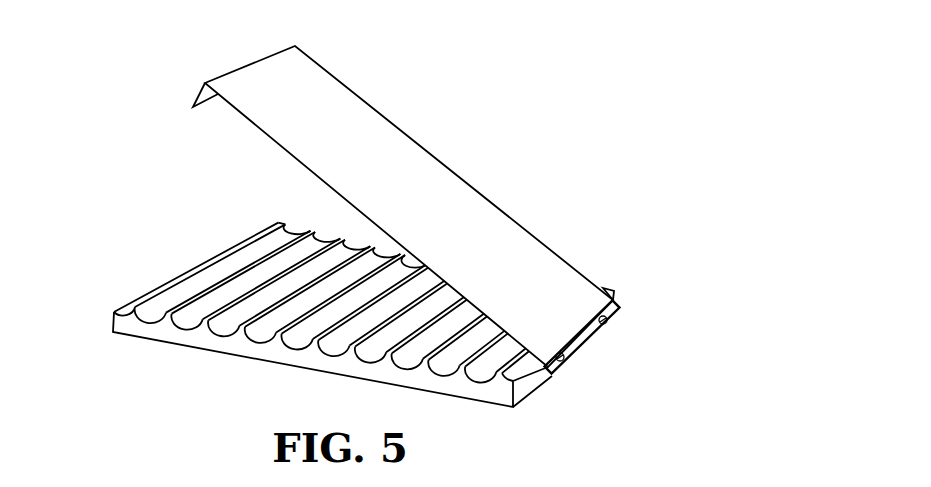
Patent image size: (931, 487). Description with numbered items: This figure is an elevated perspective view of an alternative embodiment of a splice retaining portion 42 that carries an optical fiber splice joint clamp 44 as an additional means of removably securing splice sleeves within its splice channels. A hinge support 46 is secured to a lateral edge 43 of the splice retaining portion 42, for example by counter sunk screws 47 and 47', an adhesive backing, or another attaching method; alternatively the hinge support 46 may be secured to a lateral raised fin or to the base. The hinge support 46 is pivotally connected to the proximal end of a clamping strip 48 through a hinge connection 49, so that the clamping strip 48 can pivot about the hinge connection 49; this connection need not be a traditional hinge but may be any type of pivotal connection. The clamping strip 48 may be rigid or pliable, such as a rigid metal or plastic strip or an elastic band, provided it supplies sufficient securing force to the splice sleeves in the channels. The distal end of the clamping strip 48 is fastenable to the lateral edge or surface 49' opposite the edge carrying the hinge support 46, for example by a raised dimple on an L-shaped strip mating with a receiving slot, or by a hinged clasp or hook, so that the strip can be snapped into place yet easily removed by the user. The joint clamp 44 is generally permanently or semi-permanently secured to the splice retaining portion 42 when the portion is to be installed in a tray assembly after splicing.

The splice retaining portion 42 is at (132, 168).
The lateral edge 43 is at (519, 372).
The optical fiber splice joint clamp 44 is at (447, 133).
The hinge support 46 is at (616, 307).
The counter sunk screw 47 is at (606, 373).
The counter sunk screw 47' is at (650, 336).
The clamping strip 48 is at (357, 112).
The hinge connection 49 is at (645, 268).
The lateral edge or surface 49' is at (298, 300).